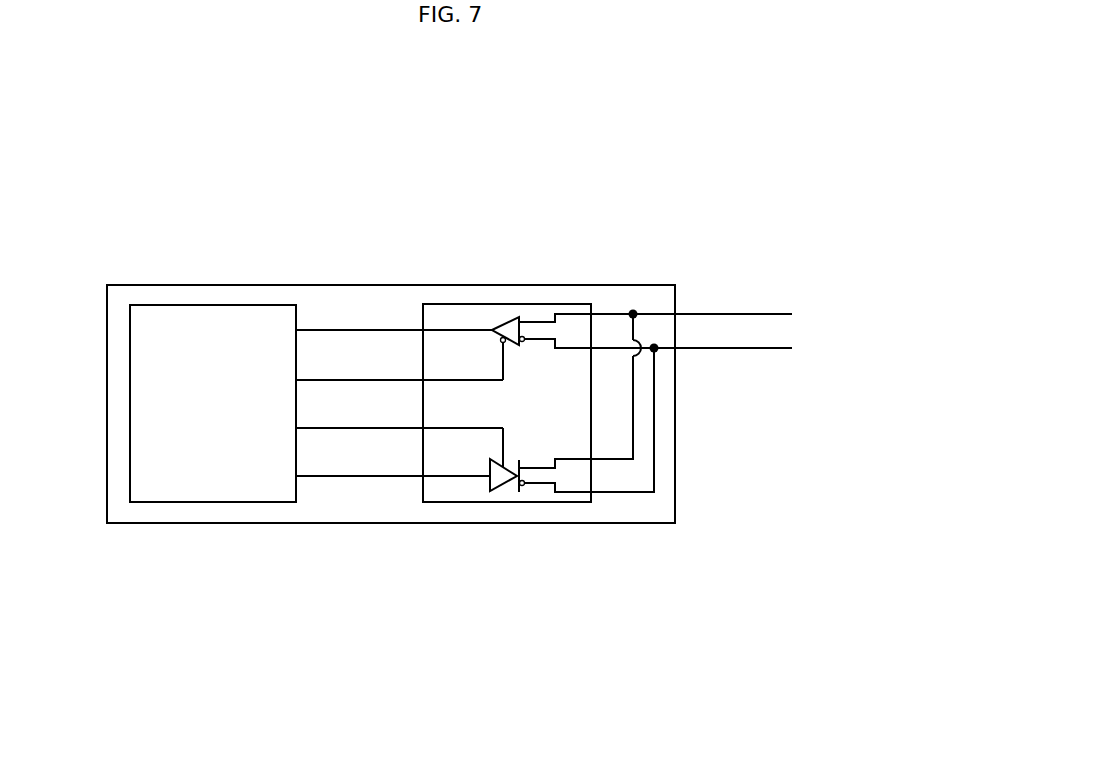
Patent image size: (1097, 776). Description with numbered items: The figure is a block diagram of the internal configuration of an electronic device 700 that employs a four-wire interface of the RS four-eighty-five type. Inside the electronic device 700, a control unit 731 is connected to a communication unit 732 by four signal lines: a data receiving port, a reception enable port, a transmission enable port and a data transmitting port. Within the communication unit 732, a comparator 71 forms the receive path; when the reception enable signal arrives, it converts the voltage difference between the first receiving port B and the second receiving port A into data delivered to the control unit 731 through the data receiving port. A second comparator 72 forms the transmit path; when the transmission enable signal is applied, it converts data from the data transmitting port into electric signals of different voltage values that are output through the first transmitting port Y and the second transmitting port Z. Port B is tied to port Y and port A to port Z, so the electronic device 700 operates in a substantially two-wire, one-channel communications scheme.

The electronic device 700 is at (654, 210).
The comparator 71 is at (505, 318).
The comparator 72 is at (485, 480).
The control unit 731 is at (212, 503).
The communication unit 732 is at (544, 416).